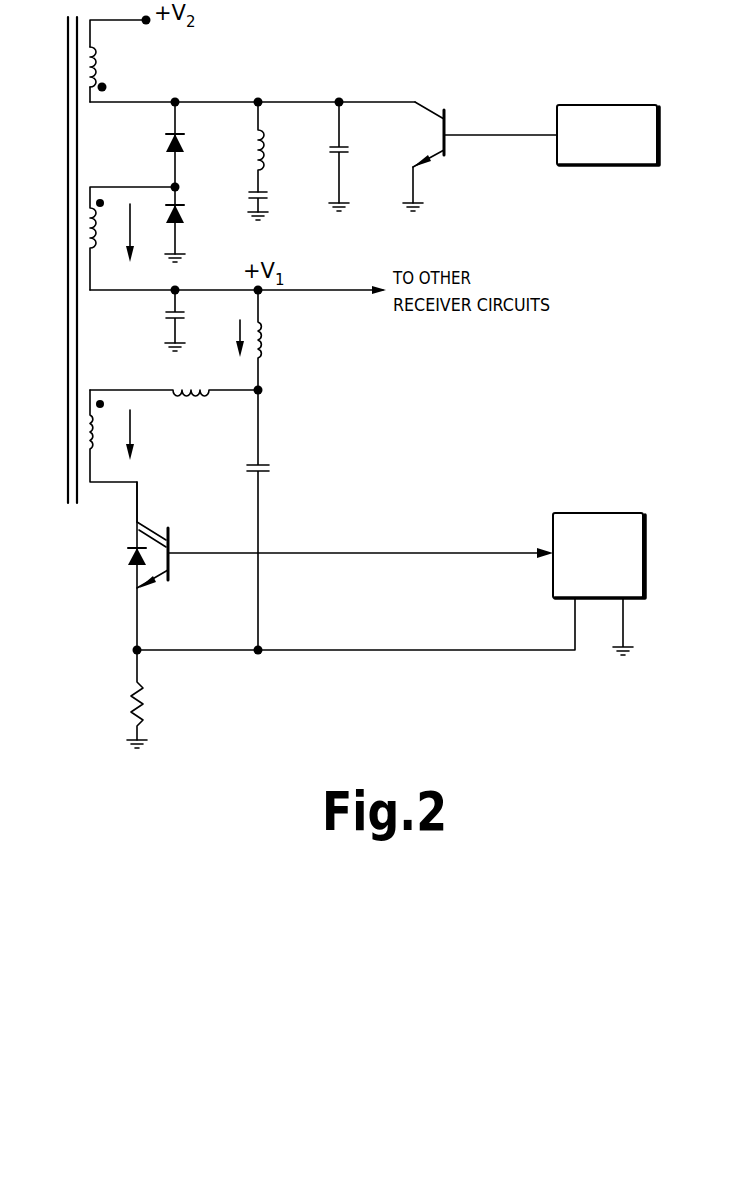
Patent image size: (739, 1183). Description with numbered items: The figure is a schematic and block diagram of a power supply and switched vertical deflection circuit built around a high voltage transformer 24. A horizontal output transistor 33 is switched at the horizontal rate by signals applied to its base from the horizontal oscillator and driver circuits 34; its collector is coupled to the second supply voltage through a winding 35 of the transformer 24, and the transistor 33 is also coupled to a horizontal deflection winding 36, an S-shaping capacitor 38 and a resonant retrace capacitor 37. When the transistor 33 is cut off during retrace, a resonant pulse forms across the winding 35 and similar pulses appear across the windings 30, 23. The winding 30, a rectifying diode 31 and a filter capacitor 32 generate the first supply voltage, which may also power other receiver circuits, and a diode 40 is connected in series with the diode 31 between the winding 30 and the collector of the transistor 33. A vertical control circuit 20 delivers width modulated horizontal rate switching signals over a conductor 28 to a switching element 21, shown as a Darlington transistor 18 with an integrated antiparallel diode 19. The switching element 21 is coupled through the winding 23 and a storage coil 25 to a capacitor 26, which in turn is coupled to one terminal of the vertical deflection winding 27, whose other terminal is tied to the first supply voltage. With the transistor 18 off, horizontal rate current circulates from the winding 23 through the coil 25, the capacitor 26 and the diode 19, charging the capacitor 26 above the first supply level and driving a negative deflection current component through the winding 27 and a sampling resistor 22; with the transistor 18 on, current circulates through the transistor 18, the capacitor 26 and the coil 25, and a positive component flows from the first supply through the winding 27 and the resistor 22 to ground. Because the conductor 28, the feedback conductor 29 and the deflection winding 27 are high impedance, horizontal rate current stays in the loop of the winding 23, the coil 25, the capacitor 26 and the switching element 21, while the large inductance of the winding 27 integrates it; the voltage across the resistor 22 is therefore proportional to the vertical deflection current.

The Darlington transistor 18 is at (170, 573).
The integrated antiparallel diode 19 is at (128, 560).
The vertical control circuit 20 is at (648, 546).
The switching element 21 is at (153, 521).
The sampling resistor 22 is at (131, 704).
The winding 23 is at (96, 422).
The high voltage transformer 24 is at (60, 356).
The storage coil 25 is at (186, 394).
The capacitor 26 is at (272, 469).
The vertical deflection winding 27 is at (263, 350).
The conductor 28 is at (449, 550).
The feedback conductor 29 is at (456, 649).
The winding 30 is at (132, 238).
The rectifying diode 31 is at (183, 218).
The filter capacitor 32 is at (185, 314).
The horizontal output transistor 33 is at (426, 106).
The horizontal oscillator and driver circuits 34 is at (595, 105).
The winding 35 is at (96, 58).
The horizontal deflection winding 36 is at (252, 148).
The resonant retrace capacitor 37 is at (350, 150).
The S-shaping capacitor 38 is at (270, 198).
The diode 40 is at (165, 148).